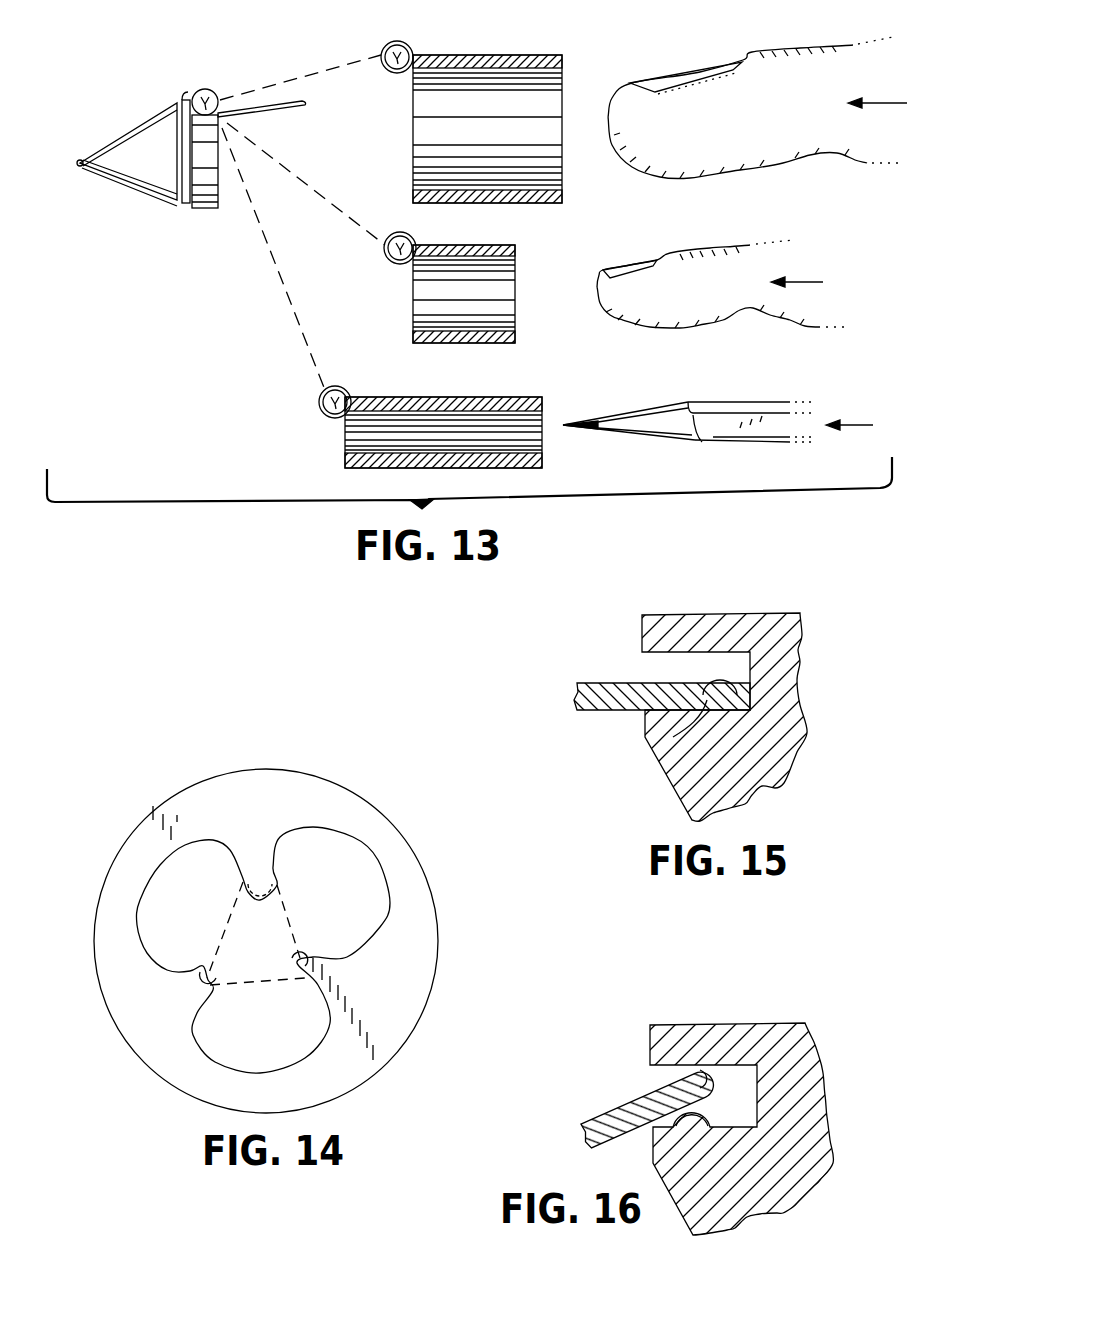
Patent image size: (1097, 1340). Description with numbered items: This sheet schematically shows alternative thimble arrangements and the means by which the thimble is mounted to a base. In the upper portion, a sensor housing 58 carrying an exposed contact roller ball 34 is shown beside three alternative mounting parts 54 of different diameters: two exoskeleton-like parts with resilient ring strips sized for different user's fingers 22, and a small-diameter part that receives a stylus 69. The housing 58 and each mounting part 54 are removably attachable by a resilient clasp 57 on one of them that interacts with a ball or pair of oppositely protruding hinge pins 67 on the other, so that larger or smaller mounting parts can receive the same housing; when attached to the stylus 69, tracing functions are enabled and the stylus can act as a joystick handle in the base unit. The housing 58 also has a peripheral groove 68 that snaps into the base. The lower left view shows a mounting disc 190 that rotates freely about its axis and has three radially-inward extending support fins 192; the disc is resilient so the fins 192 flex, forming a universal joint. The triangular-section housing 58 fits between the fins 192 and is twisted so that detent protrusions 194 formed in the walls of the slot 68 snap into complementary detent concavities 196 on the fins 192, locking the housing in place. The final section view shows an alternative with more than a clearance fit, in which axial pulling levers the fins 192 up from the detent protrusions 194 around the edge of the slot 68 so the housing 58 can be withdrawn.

In FIG. 13, the user's finger 22 is at (783, 166).
In FIG. 13, the contact roller ball 34 is at (78, 166).
In FIG. 13, the mounting part 54 is at (485, 55).
In FIG. 13, the resilient clasp 57 is at (397, 43).
In FIG. 13, the sensor housing 58 is at (152, 186).
In FIG. 14, the sensor housing 58 is at (295, 917).
In FIG. 15, the sensor housing 58 is at (758, 790).
In FIG. 16, the sensor housing 58 is at (820, 1122).
In FIG. 13, the hinge pins 67 is at (206, 92).
In FIG. 13, the peripheral groove 68 is at (185, 100).
In FIG. 15, the peripheral groove 68 is at (650, 668).
In FIG. 16, the peripheral groove 68 is at (658, 1086).
In FIG. 13, the stylus 69 is at (712, 441).
In FIG. 14, the mounting disc 190 is at (376, 808).
In FIG. 14, the support fins 192 is at (272, 888).
In FIG. 15, the support fins 192 is at (607, 709).
In FIG. 16, the support fins 192 is at (620, 1106).
In FIG. 15, the detent protrusions 194 is at (660, 745).
In FIG. 16, the detent protrusions 194 is at (710, 1113).
In FIG. 15, the detent concavities 196 is at (700, 688).
In FIG. 16, the detent concavities 196 is at (681, 1085).